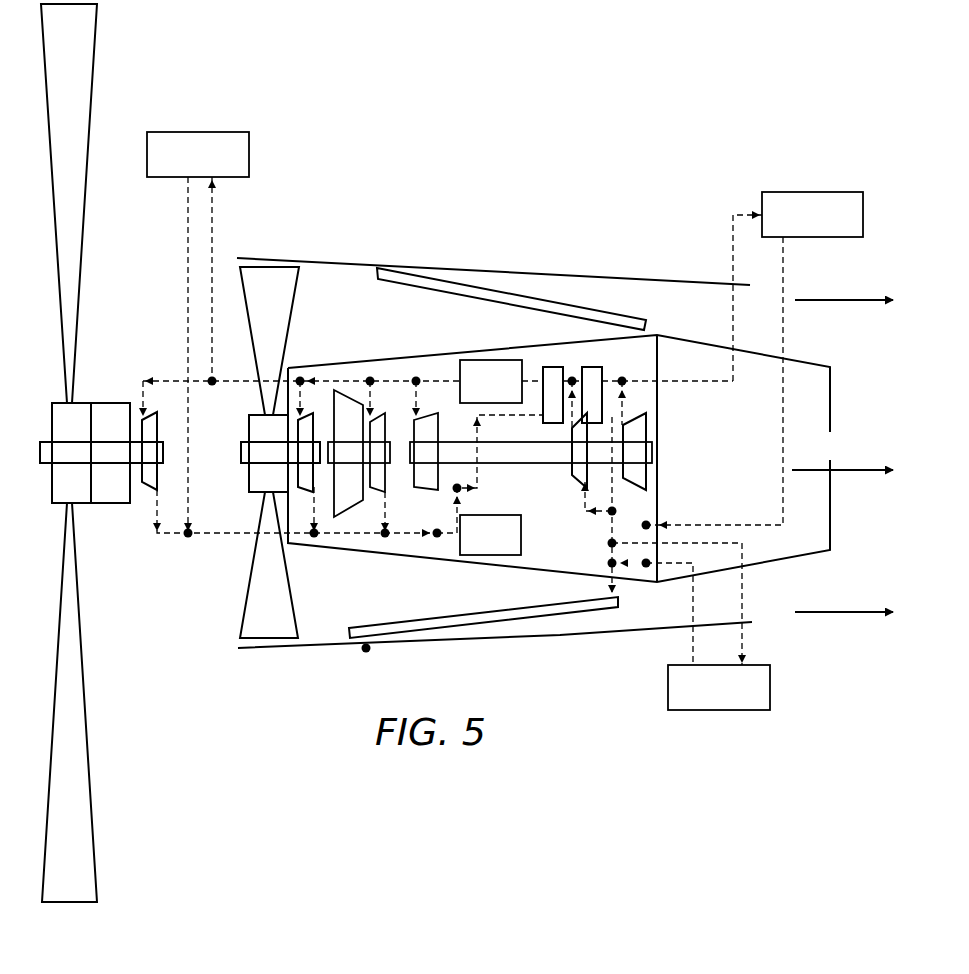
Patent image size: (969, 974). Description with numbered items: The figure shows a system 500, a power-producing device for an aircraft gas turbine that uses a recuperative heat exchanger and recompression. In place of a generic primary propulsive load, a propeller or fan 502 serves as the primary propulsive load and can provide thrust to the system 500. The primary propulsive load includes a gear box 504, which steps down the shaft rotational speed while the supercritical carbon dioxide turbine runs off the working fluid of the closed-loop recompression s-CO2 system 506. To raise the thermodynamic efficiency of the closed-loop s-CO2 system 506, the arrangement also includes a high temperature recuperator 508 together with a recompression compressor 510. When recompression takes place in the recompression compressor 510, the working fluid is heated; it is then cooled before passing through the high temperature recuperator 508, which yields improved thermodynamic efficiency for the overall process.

The system 500 is at (662, 117).
The propeller or fan 502 is at (97, 862).
The gear box 504 is at (113, 403).
The closed-loop recompression s-CO2 system 506 is at (551, 367).
The high temperature recuperator 508 is at (590, 367).
The recompression compressor 510 is at (633, 413).